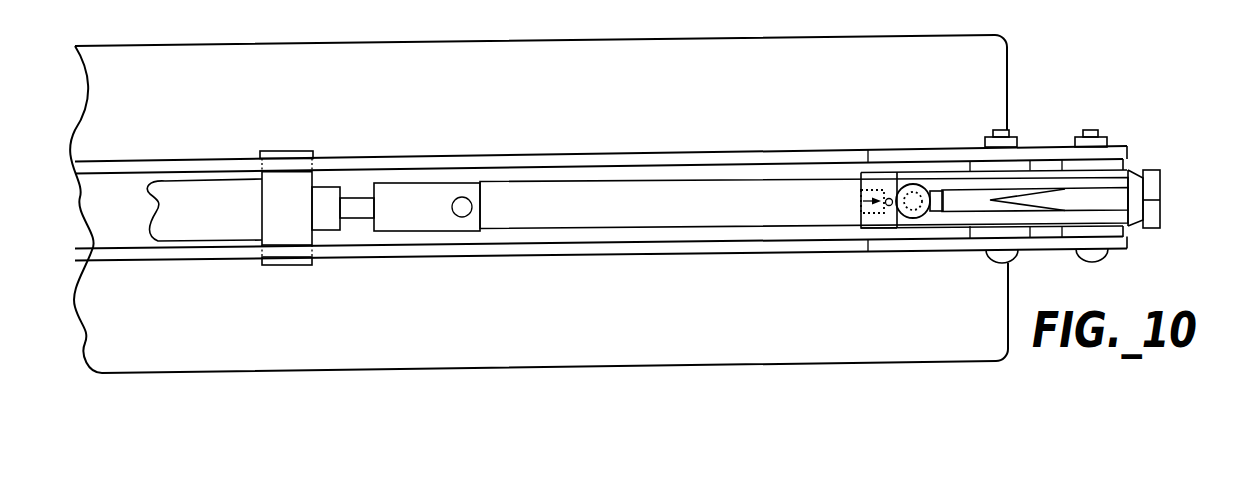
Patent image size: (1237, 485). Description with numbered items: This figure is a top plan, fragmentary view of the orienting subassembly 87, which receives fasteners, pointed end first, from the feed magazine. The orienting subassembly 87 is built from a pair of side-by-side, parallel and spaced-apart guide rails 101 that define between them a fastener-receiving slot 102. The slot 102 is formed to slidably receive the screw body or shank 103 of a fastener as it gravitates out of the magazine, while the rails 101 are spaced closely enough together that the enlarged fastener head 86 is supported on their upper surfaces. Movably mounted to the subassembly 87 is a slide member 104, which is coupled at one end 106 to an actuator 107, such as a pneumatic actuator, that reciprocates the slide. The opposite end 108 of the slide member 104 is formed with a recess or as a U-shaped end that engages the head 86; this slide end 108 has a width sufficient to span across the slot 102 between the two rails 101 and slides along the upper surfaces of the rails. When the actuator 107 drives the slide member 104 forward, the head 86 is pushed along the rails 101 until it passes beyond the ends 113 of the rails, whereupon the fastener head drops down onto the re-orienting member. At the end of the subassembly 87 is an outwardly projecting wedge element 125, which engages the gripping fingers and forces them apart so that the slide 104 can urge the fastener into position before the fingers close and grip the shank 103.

The orienting subassembly 87 is at (1012, 54).
The actuator 107 is at (202, 230).
The end of slide member 106 is at (443, 225).
The slide member 104 is at (684, 224).
The guide rails 101 is at (957, 183).
The opposite end of slide member 108 is at (893, 228).
The fastener head 86 is at (915, 217).
The fastener shank 103 is at (913, 180).
The fastener-receiving slot 102 is at (858, 199).
The ends of rails 113 is at (1140, 170).
The wedge element 125 is at (1152, 196).